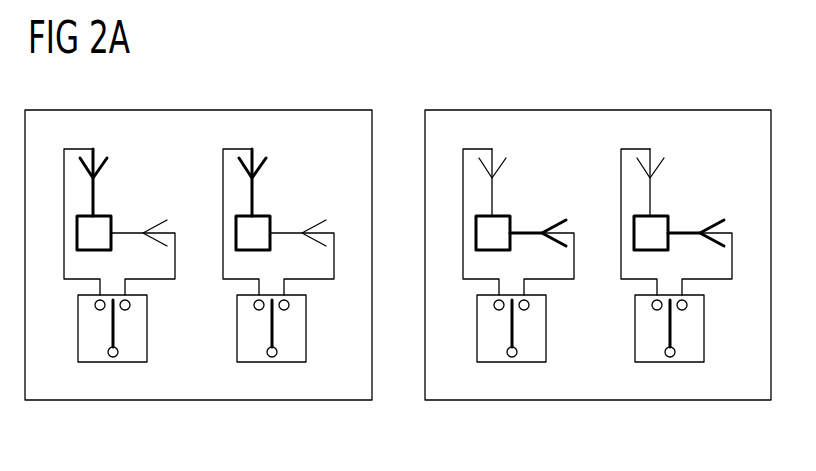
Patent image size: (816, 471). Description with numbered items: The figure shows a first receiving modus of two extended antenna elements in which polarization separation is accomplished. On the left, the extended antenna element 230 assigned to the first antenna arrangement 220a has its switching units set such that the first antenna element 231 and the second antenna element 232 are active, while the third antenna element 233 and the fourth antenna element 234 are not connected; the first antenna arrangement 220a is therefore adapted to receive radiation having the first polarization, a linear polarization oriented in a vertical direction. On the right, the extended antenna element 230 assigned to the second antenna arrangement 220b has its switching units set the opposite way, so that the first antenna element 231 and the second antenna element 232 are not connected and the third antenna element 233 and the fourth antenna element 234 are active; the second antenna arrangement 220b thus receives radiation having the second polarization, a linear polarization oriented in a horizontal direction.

The first antenna arrangement 220a is at (295, 81).
The second antenna arrangement 220b is at (695, 81).
The extended antenna element 230 is at (198, 400).
The first antenna element 231 is at (97, 193).
The second antenna element 232 is at (256, 193).
The third antenna element 233 is at (528, 229).
The fourth antenna element 234 is at (686, 229).